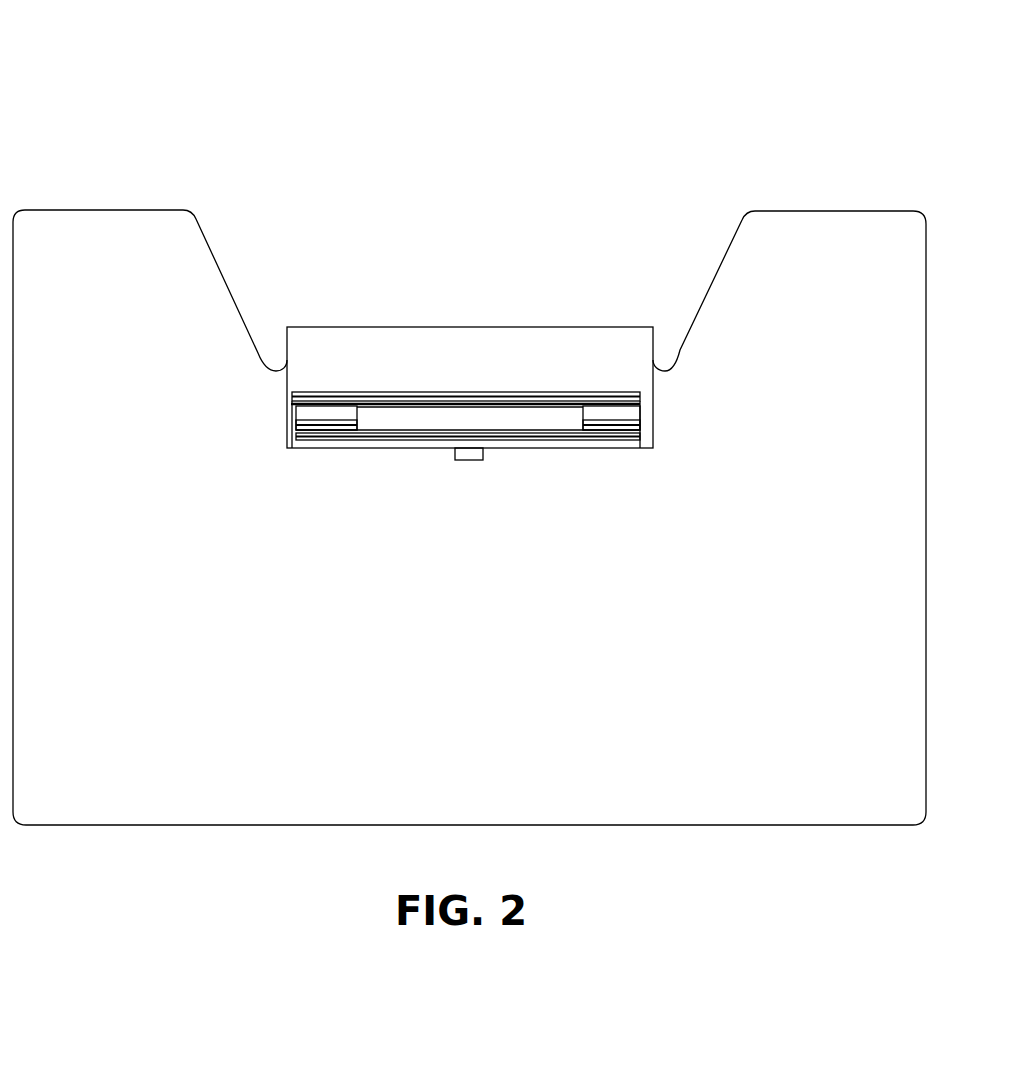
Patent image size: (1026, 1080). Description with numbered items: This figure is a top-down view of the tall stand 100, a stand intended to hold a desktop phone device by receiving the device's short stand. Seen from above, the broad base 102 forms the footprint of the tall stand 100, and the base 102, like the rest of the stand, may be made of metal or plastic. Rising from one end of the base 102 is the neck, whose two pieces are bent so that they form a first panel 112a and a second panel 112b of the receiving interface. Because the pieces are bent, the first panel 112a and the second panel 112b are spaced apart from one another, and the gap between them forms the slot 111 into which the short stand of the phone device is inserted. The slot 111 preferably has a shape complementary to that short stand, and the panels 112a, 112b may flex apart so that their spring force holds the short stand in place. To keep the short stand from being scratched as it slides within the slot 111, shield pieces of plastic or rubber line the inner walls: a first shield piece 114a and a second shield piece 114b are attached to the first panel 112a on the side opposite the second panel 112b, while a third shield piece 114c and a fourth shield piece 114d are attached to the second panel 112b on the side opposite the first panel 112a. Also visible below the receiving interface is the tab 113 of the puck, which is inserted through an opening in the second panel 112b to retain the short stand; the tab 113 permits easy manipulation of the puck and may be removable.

The tall stand 100 is at (110, 46).
The base 102 is at (122, 210).
The slot 111 is at (478, 405).
The first panel 112a is at (427, 327).
The second panel 112b is at (423, 447).
The tab 113 is at (462, 458).
The first shield piece 114a is at (317, 411).
The second shield piece 114b is at (632, 410).
The third shield piece 114c is at (318, 428).
The fourth shield piece 114d is at (636, 428).